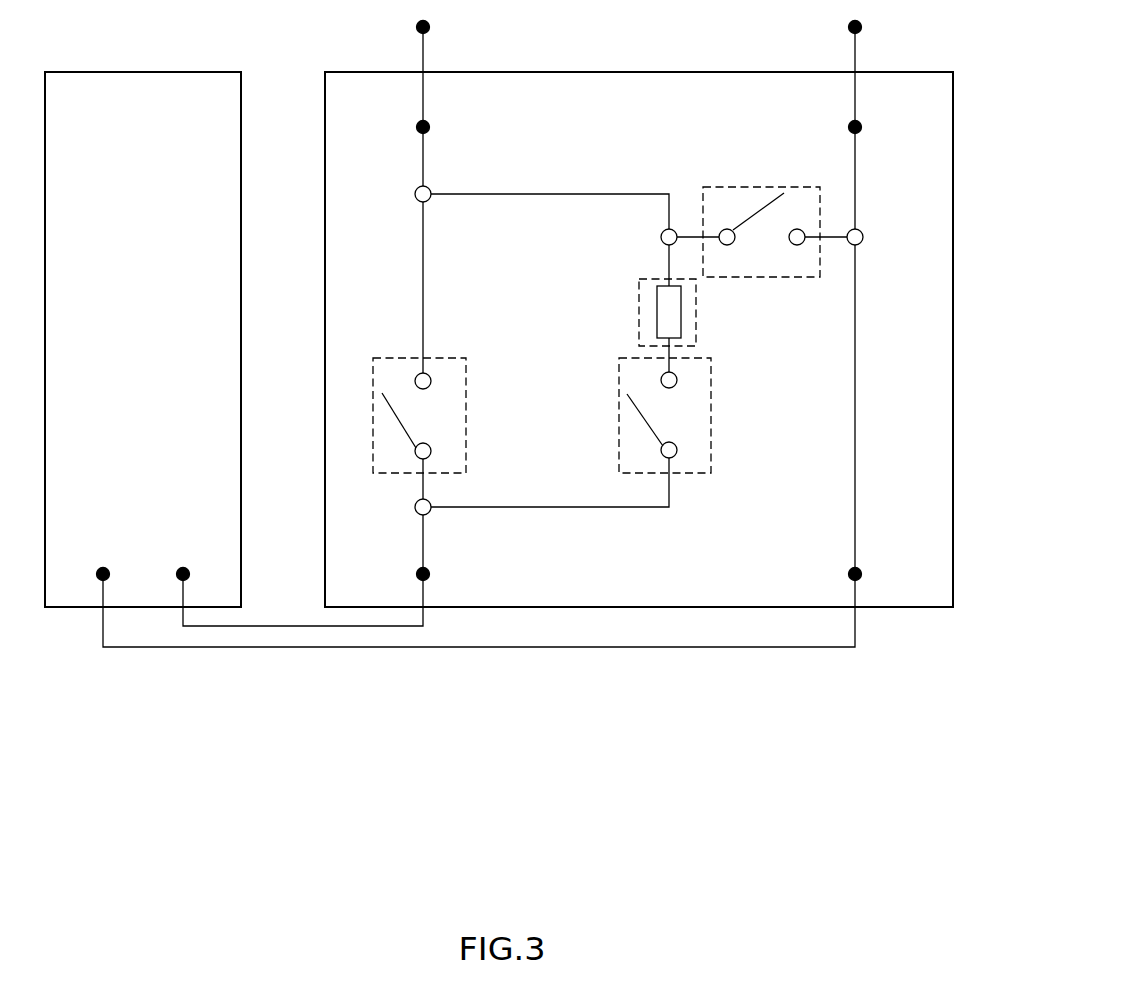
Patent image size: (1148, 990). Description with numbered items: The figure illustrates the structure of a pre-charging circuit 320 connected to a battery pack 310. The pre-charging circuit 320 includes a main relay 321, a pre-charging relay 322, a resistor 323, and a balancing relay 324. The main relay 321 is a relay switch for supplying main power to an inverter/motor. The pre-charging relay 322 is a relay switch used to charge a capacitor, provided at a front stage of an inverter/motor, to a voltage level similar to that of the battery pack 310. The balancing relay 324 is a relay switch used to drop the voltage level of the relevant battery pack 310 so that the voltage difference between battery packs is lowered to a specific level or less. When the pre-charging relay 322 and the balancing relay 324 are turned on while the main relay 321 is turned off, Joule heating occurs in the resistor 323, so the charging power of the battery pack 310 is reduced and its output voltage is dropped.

The battery pack 310 is at (142, 72).
The pre-charging circuit 320 is at (528, 334).
The main relay 321 is at (466, 415).
The pre-charging relay 322 is at (711, 415).
The resistor 323 is at (696, 312).
The balancing relay 324 is at (760, 187).